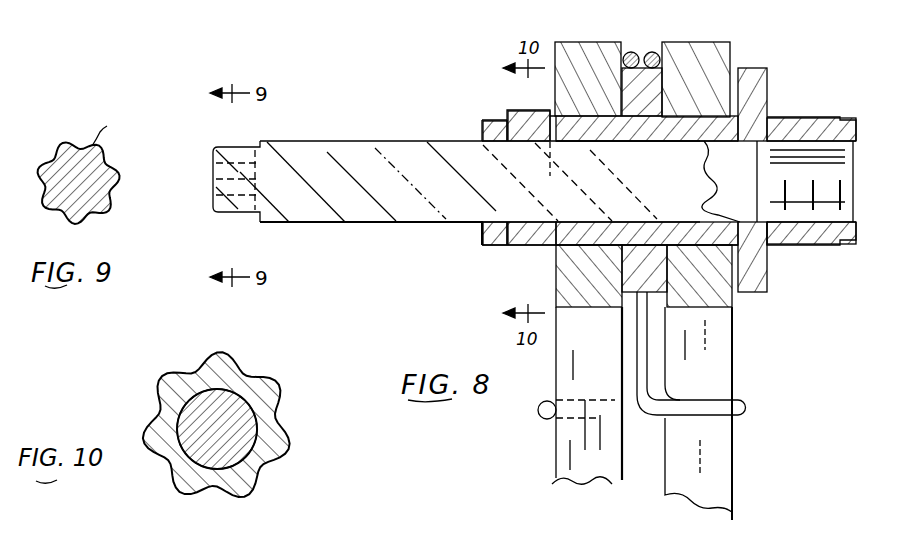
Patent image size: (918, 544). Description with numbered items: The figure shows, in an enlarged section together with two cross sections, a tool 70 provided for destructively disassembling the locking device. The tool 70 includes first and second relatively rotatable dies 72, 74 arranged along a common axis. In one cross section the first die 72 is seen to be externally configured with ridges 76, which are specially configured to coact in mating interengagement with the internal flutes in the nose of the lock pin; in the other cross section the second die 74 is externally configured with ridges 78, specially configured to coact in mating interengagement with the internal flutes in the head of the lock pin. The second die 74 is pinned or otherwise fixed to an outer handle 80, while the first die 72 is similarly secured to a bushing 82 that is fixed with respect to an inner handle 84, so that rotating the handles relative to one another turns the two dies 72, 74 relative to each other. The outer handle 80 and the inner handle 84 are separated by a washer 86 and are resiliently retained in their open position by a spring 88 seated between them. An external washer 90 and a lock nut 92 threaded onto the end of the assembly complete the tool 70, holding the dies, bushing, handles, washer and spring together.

In FIG. 8, the tool 70 is at (448, 259).
In FIG. 8, the first die 72 is at (222, 171).
In FIG. 9, the first die 72 is at (68, 142).
In FIG. 8, the second die 74 is at (528, 252).
In FIG. 10, the second die 74 is at (280, 470).
In FIG. 9, the ridges 76 is at (97, 152).
In FIG. 10, the ridges 78 is at (272, 385).
In FIG. 8, the outer handle 80 is at (562, 458).
In FIG. 8, the bushing 82 is at (672, 230).
In FIG. 8, the inner handle 84 is at (722, 369).
In FIG. 8, the washer 86 is at (645, 98).
In FIG. 8, the spring 88 is at (642, 52).
In FIG. 8, the external washer 90 is at (770, 78).
In FIG. 8, the lock nut 92 is at (833, 246).